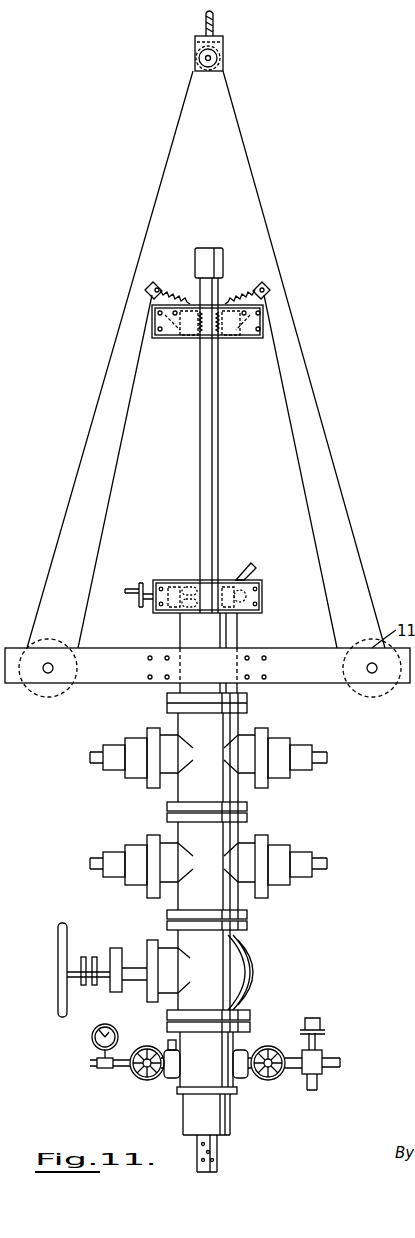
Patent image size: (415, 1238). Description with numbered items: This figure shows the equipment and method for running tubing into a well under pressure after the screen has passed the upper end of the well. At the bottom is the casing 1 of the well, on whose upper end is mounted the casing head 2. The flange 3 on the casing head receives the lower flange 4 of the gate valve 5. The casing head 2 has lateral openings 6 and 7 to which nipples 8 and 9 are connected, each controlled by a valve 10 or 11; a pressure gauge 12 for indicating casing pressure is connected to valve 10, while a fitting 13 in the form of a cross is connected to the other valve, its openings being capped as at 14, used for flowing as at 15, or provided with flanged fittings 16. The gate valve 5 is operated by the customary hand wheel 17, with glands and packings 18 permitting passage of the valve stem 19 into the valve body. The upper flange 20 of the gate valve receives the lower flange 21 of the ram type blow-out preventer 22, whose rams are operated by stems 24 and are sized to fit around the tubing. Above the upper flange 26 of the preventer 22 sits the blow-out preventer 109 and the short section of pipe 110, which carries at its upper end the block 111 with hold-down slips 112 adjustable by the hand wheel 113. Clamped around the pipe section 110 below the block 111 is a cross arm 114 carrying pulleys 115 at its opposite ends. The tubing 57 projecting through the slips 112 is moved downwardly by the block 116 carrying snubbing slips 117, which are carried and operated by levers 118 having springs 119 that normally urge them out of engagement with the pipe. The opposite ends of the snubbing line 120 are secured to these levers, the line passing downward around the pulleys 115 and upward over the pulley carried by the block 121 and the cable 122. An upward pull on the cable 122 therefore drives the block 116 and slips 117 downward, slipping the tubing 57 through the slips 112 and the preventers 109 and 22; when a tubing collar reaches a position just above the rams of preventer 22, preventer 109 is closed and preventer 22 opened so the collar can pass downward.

The casing 1 is at (226, 1115).
The casing head 2 is at (186, 1082).
The flange 3 is at (250, 1024).
The lower flange 4 is at (250, 1012).
The gate valve 5 is at (250, 958).
The lateral opening 6 is at (172, 1078).
The lateral opening 7 is at (241, 1079).
The nipple 8 is at (168, 1045).
The nipple 9 is at (267, 1046).
The valve 10 is at (140, 1076).
The valve 11 is at (292, 1069).
The pressure gauge 12 is at (94, 1043).
The fitting 13 is at (320, 1060).
The capped opening 14 is at (318, 1086).
The flowing opening 15 is at (341, 1063).
The flanged fitting 16 is at (324, 1028).
The hand wheel 17 is at (59, 955).
The glands and packings 18 is at (94, 957).
The valve stem 19 is at (72, 977).
The upper flange 20 is at (172, 925).
The lower flange 21 is at (172, 914).
The blow-out preventer 22 is at (226, 840).
The stems 24 is at (328, 862).
The upper flange 26 is at (172, 815).
The tubing 57 is at (219, 470).
The blow-out preventer 109 is at (238, 745).
The pipe section 110 is at (223, 640).
The block 111 is at (263, 594).
The hold-down slips 112 is at (236, 576).
The hand wheel 113 is at (142, 583).
The cross arm 114 is at (102, 670).
The pulleys 115 is at (48, 698).
The block 116 is at (246, 332).
The snubbing slips 117 is at (188, 332).
The levers 118 is at (150, 284).
The springs 119 is at (198, 262).
The snubbing line 120 is at (118, 456).
The block 121 is at (221, 59).
The cable 122 is at (214, 30).